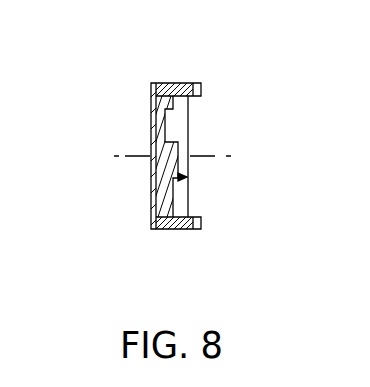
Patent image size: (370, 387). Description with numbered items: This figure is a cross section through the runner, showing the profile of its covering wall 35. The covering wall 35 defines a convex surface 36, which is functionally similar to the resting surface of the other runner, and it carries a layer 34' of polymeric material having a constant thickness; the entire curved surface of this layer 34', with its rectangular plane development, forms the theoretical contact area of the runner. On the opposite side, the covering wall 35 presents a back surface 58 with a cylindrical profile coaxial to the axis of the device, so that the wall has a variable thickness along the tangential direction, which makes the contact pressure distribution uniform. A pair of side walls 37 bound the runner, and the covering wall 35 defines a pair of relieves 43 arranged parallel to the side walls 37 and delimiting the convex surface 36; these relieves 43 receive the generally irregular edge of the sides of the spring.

The layer 34' is at (136, 156).
The side walls 37 is at (202, 82).
The relieves 43 is at (167, 108).
The back surface 58 is at (151, 187).
The covering wall 35 is at (157, 215).
The convex surface 36 is at (187, 178).